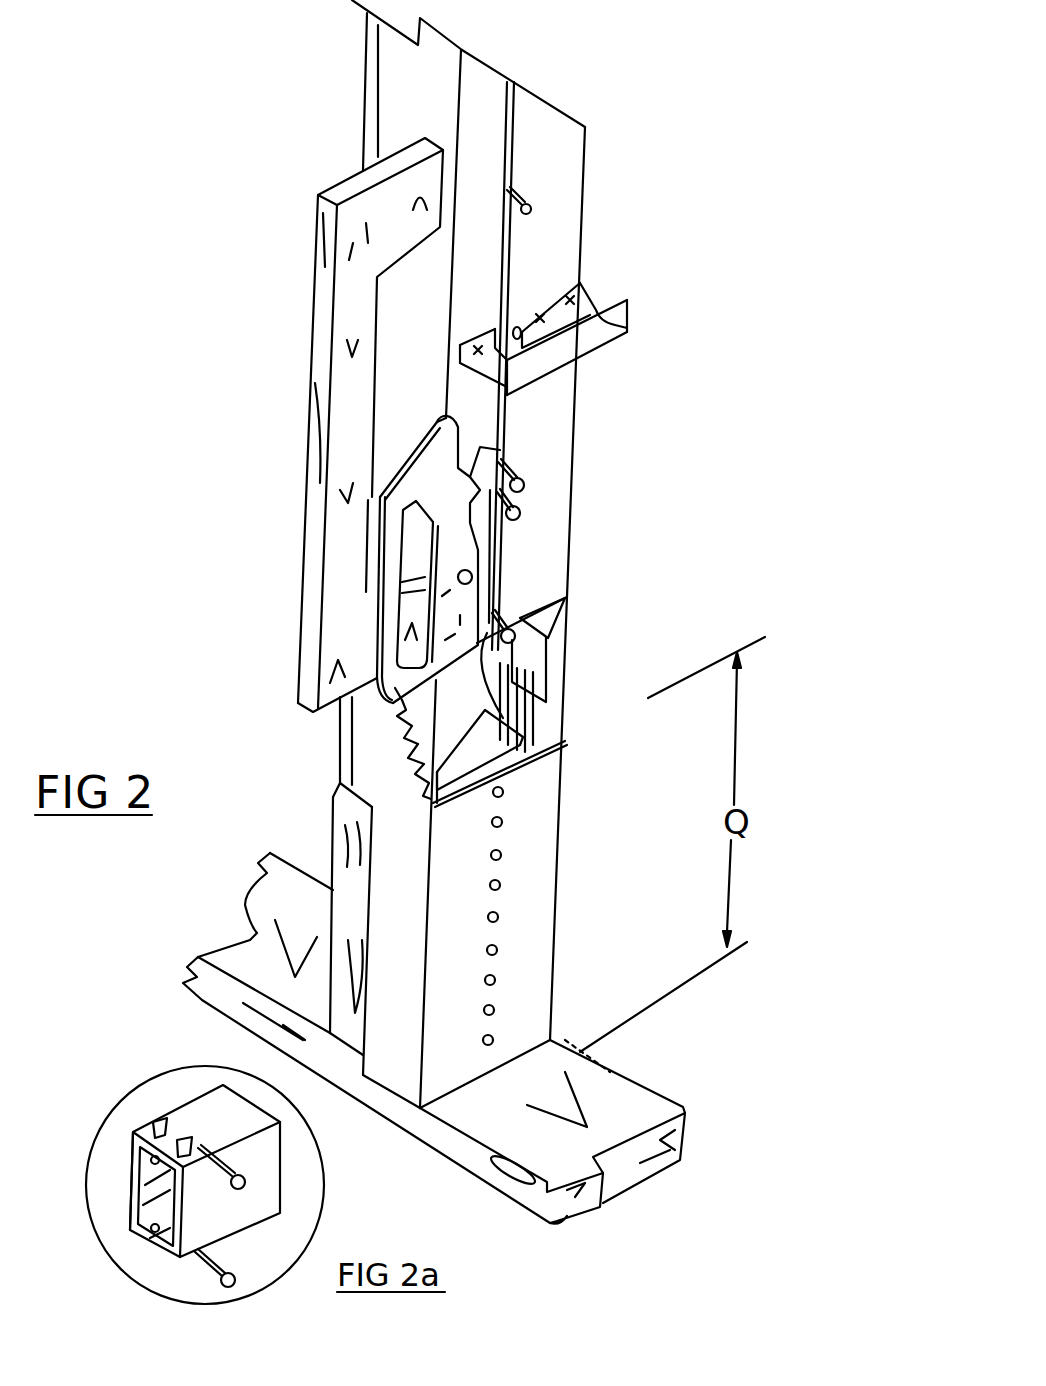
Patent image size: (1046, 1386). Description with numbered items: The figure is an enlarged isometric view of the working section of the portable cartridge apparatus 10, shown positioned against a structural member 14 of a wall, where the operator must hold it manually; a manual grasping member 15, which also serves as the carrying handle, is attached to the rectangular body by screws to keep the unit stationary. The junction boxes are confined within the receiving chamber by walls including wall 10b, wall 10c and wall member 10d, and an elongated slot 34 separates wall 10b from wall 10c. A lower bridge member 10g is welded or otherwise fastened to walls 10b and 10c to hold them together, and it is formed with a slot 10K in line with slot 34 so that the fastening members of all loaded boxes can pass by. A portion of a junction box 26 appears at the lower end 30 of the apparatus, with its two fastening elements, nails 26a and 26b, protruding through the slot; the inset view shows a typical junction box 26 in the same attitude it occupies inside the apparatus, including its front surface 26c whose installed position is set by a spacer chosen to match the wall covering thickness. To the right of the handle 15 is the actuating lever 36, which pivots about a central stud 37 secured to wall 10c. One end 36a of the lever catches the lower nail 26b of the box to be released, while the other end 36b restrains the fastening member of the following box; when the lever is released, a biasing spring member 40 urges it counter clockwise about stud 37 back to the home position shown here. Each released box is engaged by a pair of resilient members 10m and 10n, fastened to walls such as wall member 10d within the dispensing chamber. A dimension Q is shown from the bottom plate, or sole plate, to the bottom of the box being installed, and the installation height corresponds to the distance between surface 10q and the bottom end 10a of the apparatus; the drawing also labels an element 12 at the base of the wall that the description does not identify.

In FIG. 2, the portable cartridge apparatus 10 is at (805, 545).
In FIG. 2, the bottom end 10a is at (550, 1043).
In FIG. 2, the wall 10b is at (567, 250).
In FIG. 2, the wall 10c is at (490, 106).
In FIG. 2, the wall member 10d is at (415, 108).
In FIG. 2, the lower bridge member 10g is at (603, 347).
In FIG. 2, the slot 10K is at (627, 313).
In FIG. 2, the resilient member 10m is at (533, 680).
In FIG. 2, the resilient member 10n is at (495, 775).
In FIG. 2, the surface 10q is at (490, 800).
In FIG. 2, the base member 12 is at (685, 1110).
In FIG. 2, the structural member 14 is at (333, 833).
In FIG. 2, the manual grasping member 15 is at (317, 513).
In FIG. 2, the junction box 26 is at (607, 567).
In FIG. 2A, the junction box 26 is at (177, 1101).
In FIG. 2, the fastening element 26a is at (520, 520).
In FIG. 2A, the fastening element 26a is at (222, 1185).
In FIG. 2, the fastening element 26b is at (515, 640).
In FIG. 2A, the fastening element 26b is at (213, 1257).
In FIG. 2A, the front surface 26c is at (130, 1200).
In FIG. 2, the lower end 30 is at (520, 557).
In FIG. 2, the elongated slot 34 is at (515, 153).
In FIG. 2, the actuating lever 36 is at (443, 607).
In FIG. 2, the end of lever 36a is at (473, 762).
In FIG. 2, the end of lever 36b is at (490, 448).
In FIG. 2, the central stud 37 is at (473, 577).
In FIG. 2, the biasing spring member 40 is at (397, 722).